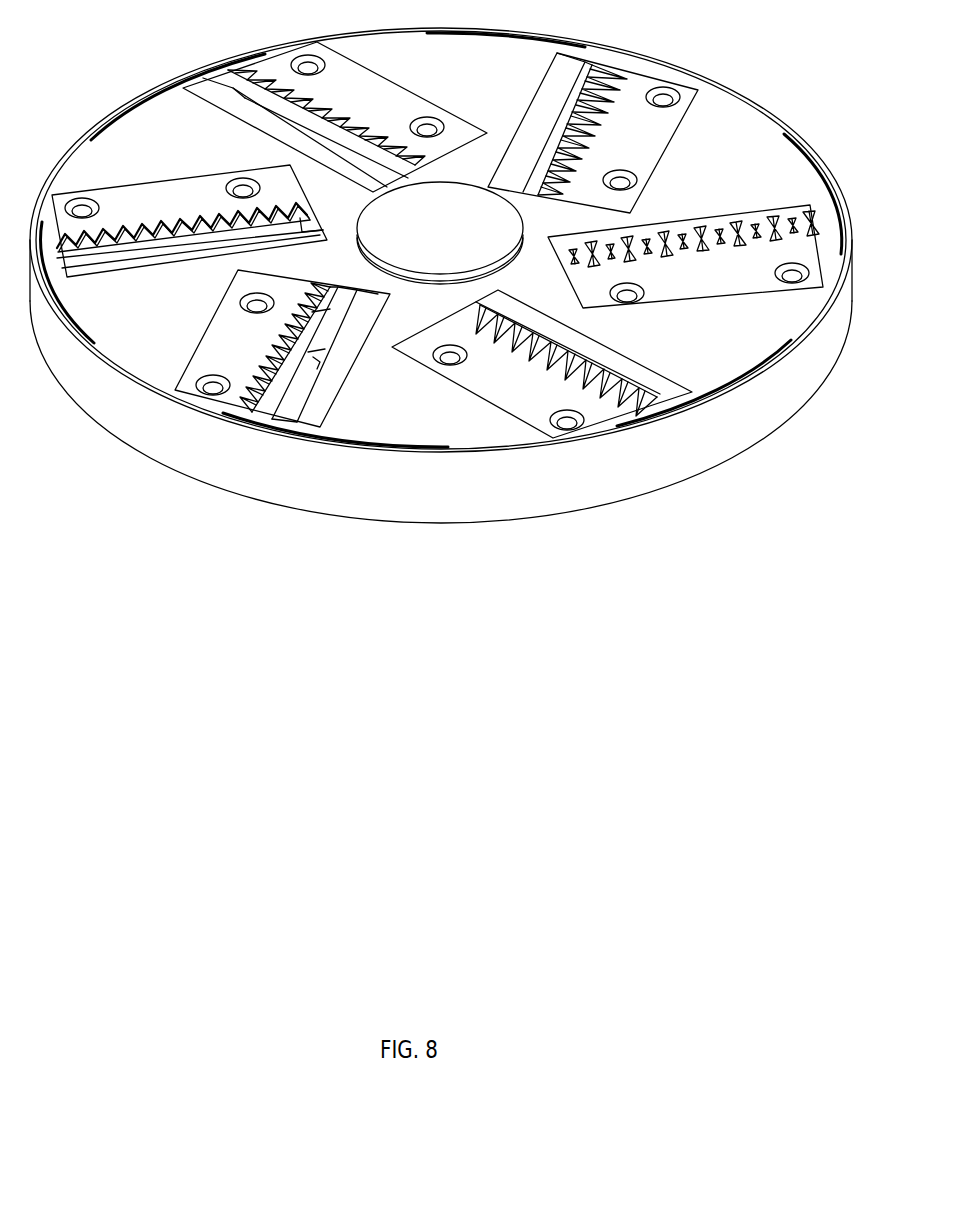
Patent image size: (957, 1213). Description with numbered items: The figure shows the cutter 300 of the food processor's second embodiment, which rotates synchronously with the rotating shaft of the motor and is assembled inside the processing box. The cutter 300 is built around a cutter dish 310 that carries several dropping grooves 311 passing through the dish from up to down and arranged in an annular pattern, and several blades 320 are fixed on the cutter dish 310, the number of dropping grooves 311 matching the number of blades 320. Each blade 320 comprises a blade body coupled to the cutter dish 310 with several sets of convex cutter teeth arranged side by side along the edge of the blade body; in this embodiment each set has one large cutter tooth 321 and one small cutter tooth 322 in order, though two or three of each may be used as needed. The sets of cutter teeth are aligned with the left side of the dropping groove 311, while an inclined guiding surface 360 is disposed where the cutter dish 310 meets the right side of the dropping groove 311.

The cutter 300 is at (441, 431).
The cutter dish 310 is at (405, 412).
The dropping groove 311 is at (292, 397).
The blade 320 is at (523, 387).
The large cutter tooth 321 is at (777, 226).
The small cutter tooth 322 is at (757, 231).
The inclined guiding surface 360 is at (333, 375).